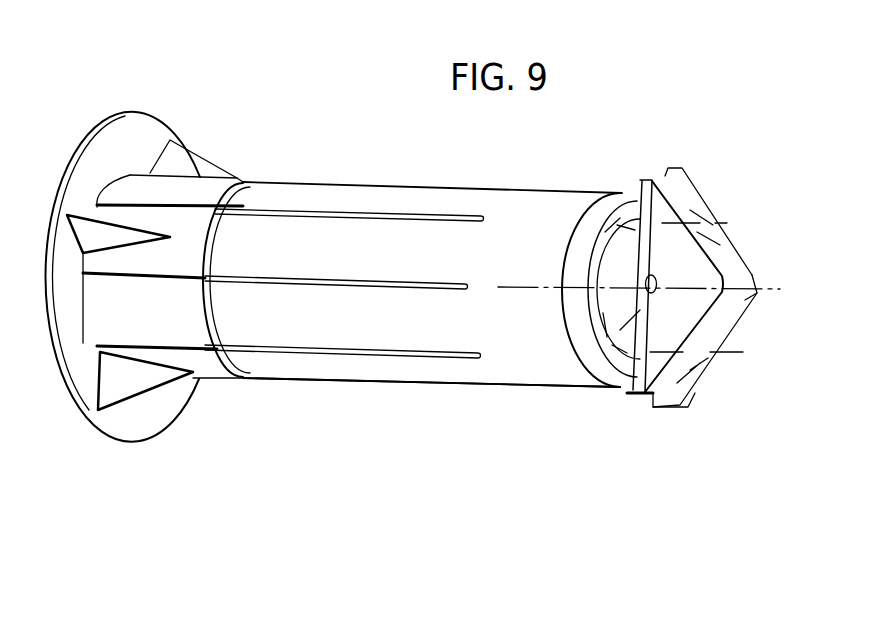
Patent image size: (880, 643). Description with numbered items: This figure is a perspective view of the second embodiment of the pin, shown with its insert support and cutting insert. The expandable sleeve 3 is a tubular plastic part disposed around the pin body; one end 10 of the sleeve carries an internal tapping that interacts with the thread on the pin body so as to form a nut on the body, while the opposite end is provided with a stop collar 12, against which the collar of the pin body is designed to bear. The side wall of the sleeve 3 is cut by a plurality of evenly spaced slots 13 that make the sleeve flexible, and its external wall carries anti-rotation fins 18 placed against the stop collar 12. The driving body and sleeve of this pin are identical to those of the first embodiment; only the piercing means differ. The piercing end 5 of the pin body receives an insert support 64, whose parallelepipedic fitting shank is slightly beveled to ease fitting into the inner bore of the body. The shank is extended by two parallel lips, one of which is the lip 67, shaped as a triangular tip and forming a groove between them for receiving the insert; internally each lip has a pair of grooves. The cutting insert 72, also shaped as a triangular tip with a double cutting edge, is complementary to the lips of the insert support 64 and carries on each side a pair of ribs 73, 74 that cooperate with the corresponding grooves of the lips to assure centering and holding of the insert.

The expandable sleeve 3 is at (356, 398).
The piercing end 5 is at (617, 247).
The end of the sleeve 10 is at (508, 365).
The stop collar 12 is at (110, 125).
The slots 13 is at (323, 275).
The anti-rotation fins 18 is at (190, 167).
The insert support 64 is at (663, 318).
The lip 67 is at (683, 272).
The cutting insert 72 is at (732, 283).
The rib 73 is at (703, 217).
The rib 74 is at (690, 377).